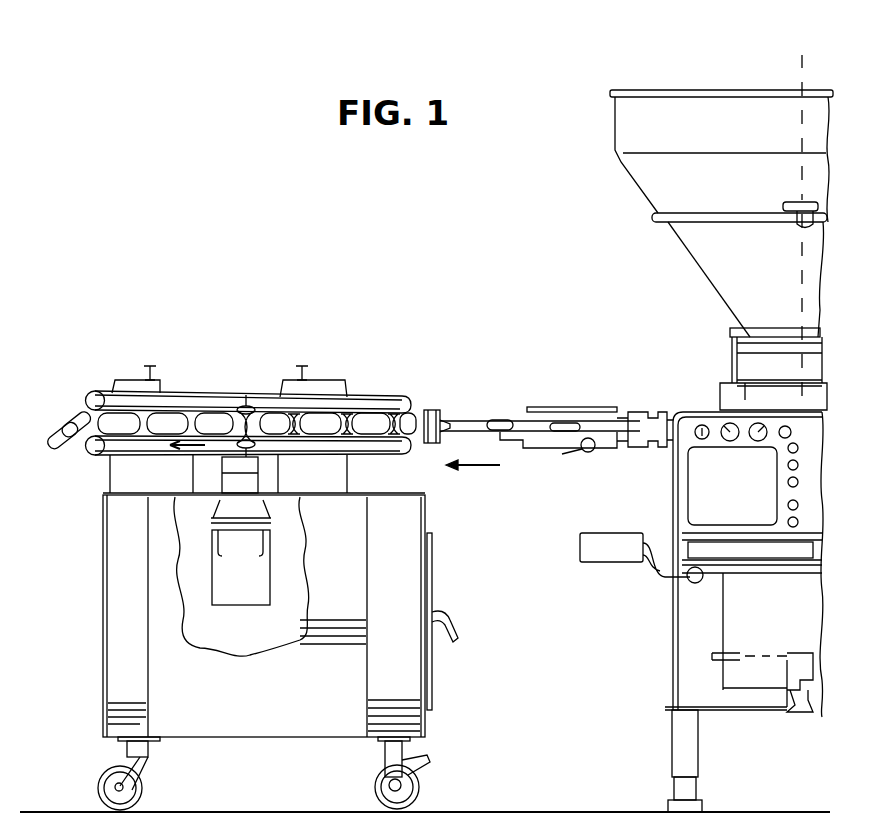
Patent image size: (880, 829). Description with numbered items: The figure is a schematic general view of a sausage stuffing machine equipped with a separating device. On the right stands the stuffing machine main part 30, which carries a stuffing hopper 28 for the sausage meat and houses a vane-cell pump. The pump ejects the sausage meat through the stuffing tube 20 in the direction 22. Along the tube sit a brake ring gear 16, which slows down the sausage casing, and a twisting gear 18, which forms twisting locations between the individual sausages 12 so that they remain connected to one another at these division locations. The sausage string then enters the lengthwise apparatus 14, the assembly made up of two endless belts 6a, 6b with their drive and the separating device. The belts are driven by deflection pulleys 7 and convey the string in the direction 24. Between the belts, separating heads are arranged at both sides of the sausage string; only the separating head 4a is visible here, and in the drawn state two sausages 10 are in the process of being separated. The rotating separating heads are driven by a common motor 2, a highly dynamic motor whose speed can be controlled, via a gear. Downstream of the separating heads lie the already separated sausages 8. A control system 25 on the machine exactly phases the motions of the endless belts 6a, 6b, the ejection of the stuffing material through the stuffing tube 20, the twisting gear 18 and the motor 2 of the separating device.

The motor 2 is at (235, 585).
The separating head 4a is at (250, 410).
The endless belt 6a is at (157, 437).
The endless belt 6b is at (167, 420).
The deflection pulleys 7 is at (90, 393).
The separated sausages 8 is at (125, 420).
The sausages being separated 10 is at (212, 417).
The individual sausages 12 is at (373, 420).
The lengthwise apparatus 14 is at (217, 389).
The brake ring gear 16 is at (433, 410).
The twisting gear 18 is at (642, 412).
The stuffing tube 20 is at (492, 418).
The ejection direction 22 is at (487, 467).
The conveying direction 24 is at (190, 442).
The control system 25 is at (712, 480).
The stuffing hopper 28 is at (658, 180).
The stuffing machine main part 30 is at (680, 82).